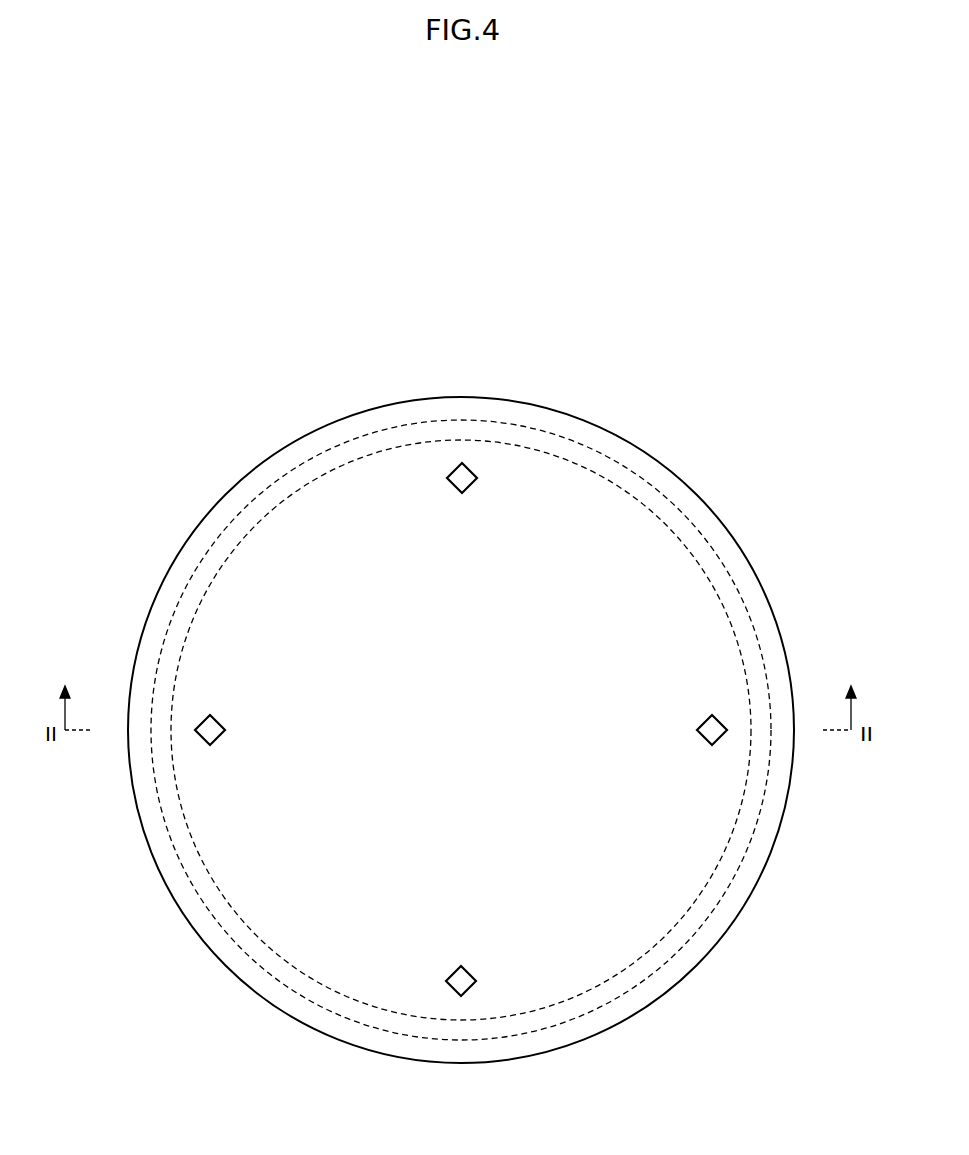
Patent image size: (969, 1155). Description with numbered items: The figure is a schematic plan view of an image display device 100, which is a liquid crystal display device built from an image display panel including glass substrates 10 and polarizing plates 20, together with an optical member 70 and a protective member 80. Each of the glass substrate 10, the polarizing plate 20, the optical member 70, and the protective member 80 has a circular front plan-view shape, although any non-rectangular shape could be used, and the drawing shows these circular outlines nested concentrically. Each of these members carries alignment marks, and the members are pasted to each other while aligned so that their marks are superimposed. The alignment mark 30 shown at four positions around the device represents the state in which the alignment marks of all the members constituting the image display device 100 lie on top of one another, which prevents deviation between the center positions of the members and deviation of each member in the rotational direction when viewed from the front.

The image display device 100 is at (246, 403).
The protective member 80 is at (195, 527).
The glass substrate 10 is at (624, 458).
The polarizing plate 20 is at (696, 533).
The optical member 70 is at (284, 964).
The alignment mark 30 is at (472, 468).